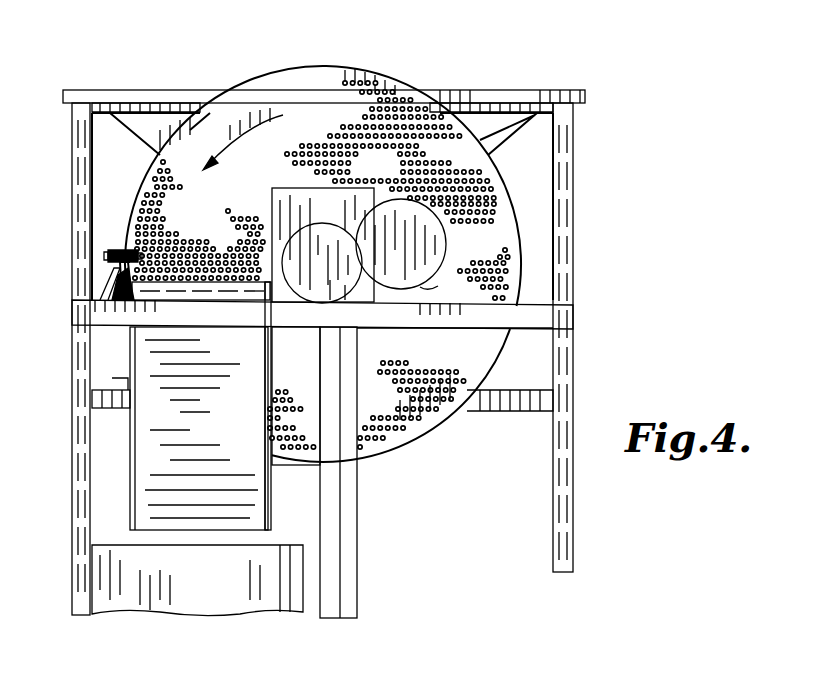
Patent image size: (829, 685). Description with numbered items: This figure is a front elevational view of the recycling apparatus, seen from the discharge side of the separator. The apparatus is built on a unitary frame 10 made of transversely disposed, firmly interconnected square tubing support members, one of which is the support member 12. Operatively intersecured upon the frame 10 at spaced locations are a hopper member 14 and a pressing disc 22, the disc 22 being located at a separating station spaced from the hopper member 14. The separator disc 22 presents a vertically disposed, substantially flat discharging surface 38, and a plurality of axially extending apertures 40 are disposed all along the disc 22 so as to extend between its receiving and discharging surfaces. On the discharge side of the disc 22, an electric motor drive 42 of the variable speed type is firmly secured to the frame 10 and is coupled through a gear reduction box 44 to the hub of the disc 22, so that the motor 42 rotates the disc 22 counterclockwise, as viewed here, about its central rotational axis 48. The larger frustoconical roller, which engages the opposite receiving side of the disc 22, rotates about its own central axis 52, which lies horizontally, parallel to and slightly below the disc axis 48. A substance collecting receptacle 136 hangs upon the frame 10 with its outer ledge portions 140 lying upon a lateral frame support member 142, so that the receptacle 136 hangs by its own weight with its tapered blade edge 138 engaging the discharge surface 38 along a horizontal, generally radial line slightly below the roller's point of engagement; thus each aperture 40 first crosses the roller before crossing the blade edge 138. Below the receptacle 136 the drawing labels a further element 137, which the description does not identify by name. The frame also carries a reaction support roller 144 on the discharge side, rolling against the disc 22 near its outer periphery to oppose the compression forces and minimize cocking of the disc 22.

The unitary frame 10 is at (576, 369).
The square tubing support member 12 is at (82, 490).
The hopper member 14 is at (499, 91).
The pressing disc 22 is at (290, 62).
The discharging surface 38 is at (383, 100).
The apertures 40 is at (240, 216).
The electric motor drive 42 is at (445, 241).
The gear reduction box 44 is at (343, 196).
The central rotational axis 48 is at (324, 266).
The central axis 52 is at (85, 267).
The substance collecting receptacle 136 is at (155, 437).
The bottom box 137 is at (172, 600).
The tapered blade edge 138 is at (186, 284).
The outer ledge portions 140 is at (263, 298).
The lateral frame support member 142 is at (283, 327).
The reaction support roller 144 is at (127, 247).